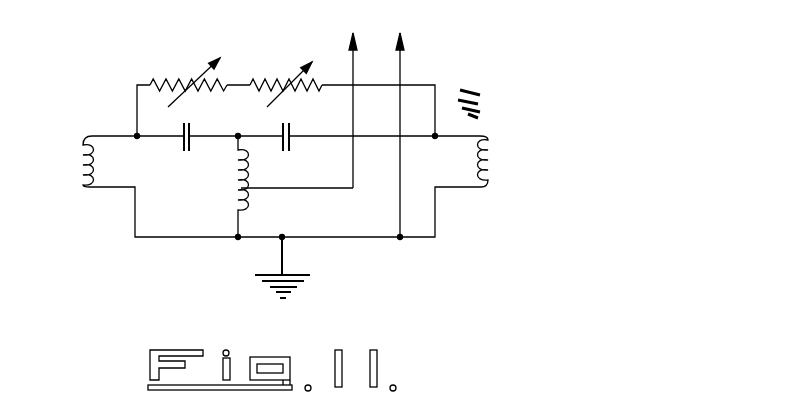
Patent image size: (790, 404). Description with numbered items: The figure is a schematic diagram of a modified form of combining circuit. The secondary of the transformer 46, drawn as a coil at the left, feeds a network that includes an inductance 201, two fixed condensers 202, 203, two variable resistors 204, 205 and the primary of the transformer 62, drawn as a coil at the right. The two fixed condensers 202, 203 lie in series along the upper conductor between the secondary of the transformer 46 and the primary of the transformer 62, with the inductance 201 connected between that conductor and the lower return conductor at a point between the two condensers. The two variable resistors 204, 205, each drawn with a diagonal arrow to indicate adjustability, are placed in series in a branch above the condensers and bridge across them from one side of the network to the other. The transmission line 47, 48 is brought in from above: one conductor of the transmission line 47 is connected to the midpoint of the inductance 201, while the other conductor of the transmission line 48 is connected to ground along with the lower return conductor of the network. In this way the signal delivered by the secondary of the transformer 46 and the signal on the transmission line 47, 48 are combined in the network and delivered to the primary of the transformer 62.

The transformer 46 is at (84, 172).
The transformer 62 is at (490, 170).
The inductance 201 is at (234, 180).
The fixed condenser 202 is at (185, 147).
The fixed condenser 203 is at (289, 147).
The variable resistor 204 is at (176, 80).
The variable resistor 205 is at (284, 80).
The transmission line 47 is at (352, 54).
The transmission line 48 is at (401, 60).